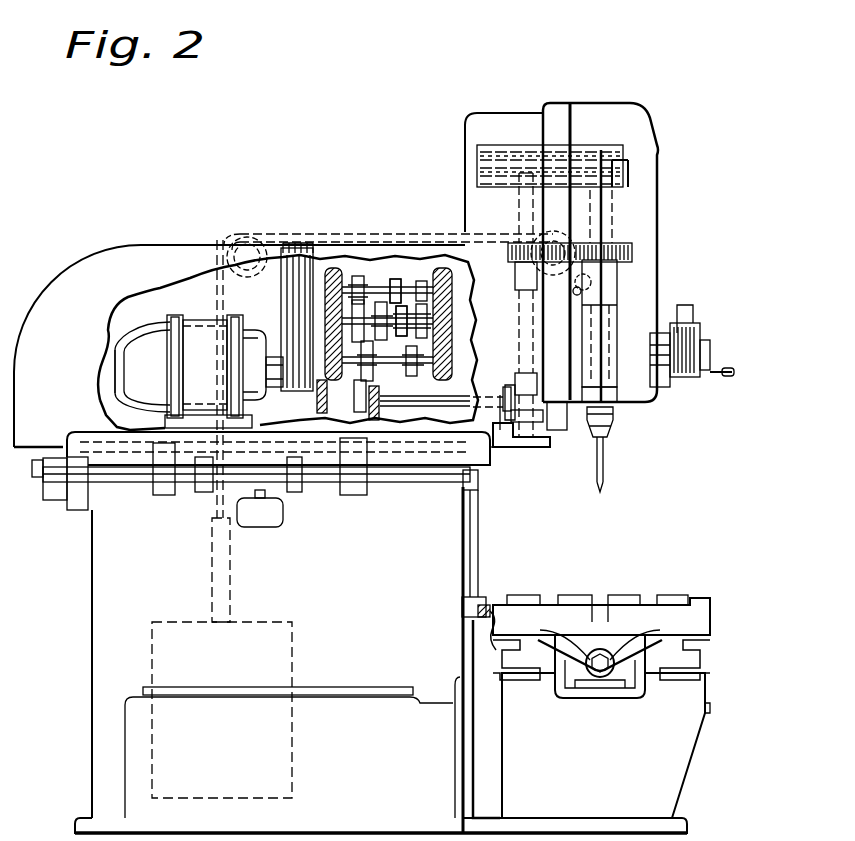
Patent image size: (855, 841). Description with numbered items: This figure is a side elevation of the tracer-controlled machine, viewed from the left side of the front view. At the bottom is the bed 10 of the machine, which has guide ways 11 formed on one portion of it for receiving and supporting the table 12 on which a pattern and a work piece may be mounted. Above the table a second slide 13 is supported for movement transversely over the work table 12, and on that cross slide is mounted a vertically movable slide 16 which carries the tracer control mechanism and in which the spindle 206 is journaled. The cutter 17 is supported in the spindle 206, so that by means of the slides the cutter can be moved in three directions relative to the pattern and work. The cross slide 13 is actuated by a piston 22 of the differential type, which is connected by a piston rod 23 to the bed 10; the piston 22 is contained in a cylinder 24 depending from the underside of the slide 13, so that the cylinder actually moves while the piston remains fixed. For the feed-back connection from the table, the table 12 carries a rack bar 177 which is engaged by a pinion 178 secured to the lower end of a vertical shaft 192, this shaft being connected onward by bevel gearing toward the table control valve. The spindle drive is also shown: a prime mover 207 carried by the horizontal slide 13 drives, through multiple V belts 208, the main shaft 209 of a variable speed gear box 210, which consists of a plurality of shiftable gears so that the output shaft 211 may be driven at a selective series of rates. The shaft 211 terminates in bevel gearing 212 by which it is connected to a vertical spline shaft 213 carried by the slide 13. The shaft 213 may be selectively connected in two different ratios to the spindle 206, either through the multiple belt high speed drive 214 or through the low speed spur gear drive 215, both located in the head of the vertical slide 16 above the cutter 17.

The bed 10 is at (92, 640).
The guide ways 11 is at (700, 654).
The table 12 is at (712, 623).
The slide 13 is at (142, 250).
The vertically movable slide 16 is at (583, 275).
The cutter 17 is at (606, 487).
The piston 22 is at (316, 474).
The piston rod 23 is at (127, 483).
The cylinder 24 is at (185, 490).
The rack bar 177 is at (490, 622).
The pinion 178 is at (465, 612).
The vertical shaft 192 is at (479, 540).
The spindle 206 is at (620, 300).
The prime mover 207 is at (190, 330).
The multiple V belts 208 is at (272, 263).
The main shaft 209 is at (375, 285).
The variable speed gear box 210 is at (420, 303).
The output shaft 211 is at (425, 410).
The bevel gearing 212 is at (515, 448).
The vertical spline shaft 213 is at (527, 322).
The multiple belt high speed drive 214 is at (580, 150).
The low speed spur gear drive 215 is at (593, 243).